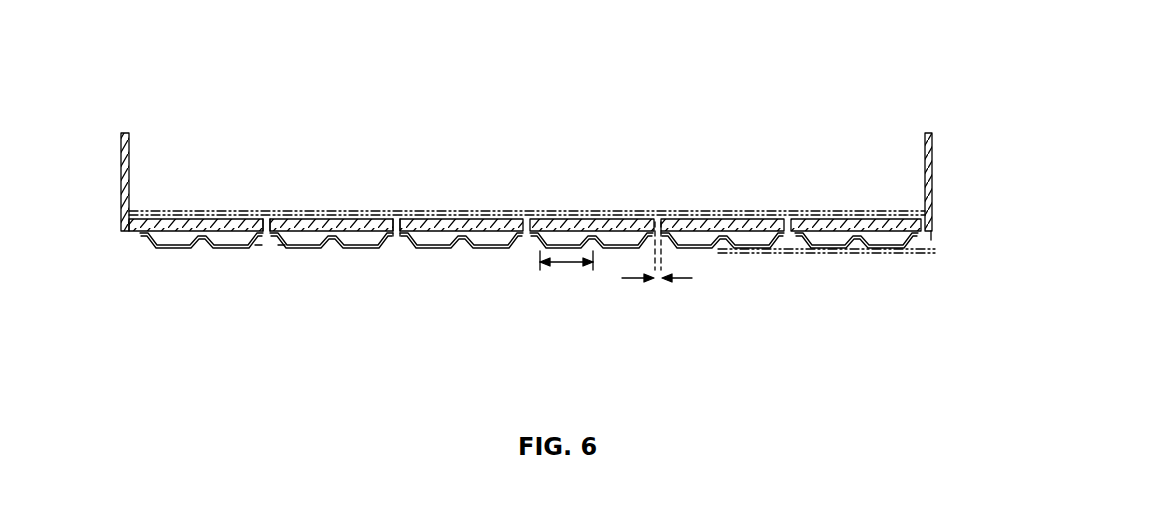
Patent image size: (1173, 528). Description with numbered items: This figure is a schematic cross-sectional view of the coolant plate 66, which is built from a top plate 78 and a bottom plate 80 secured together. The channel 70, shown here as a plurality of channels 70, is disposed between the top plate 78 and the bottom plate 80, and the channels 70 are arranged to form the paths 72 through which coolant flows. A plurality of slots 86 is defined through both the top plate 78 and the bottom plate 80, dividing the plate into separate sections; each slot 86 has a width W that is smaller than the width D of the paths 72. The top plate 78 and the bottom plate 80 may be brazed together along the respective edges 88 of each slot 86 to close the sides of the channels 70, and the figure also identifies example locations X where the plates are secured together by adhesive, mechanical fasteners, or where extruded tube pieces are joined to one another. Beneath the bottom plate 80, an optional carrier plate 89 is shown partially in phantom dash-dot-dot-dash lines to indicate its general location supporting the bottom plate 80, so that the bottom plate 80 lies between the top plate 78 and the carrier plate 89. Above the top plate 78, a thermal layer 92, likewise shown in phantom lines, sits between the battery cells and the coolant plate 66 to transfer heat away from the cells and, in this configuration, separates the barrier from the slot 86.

The coolant plate 66 is at (717, 46).
The top plate 78 is at (931, 225).
The bottom plate 80 is at (440, 243).
The channel 70 is at (520, 244).
The paths 72 is at (820, 240).
The slots 86 is at (265, 221).
The edges 88 is at (424, 285).
The carrier plate 89 is at (826, 262).
The thermal layer 92 is at (593, 216).
The locations X is at (256, 247).
The width of the paths D is at (556, 268).
The width of the slots W is at (633, 280).